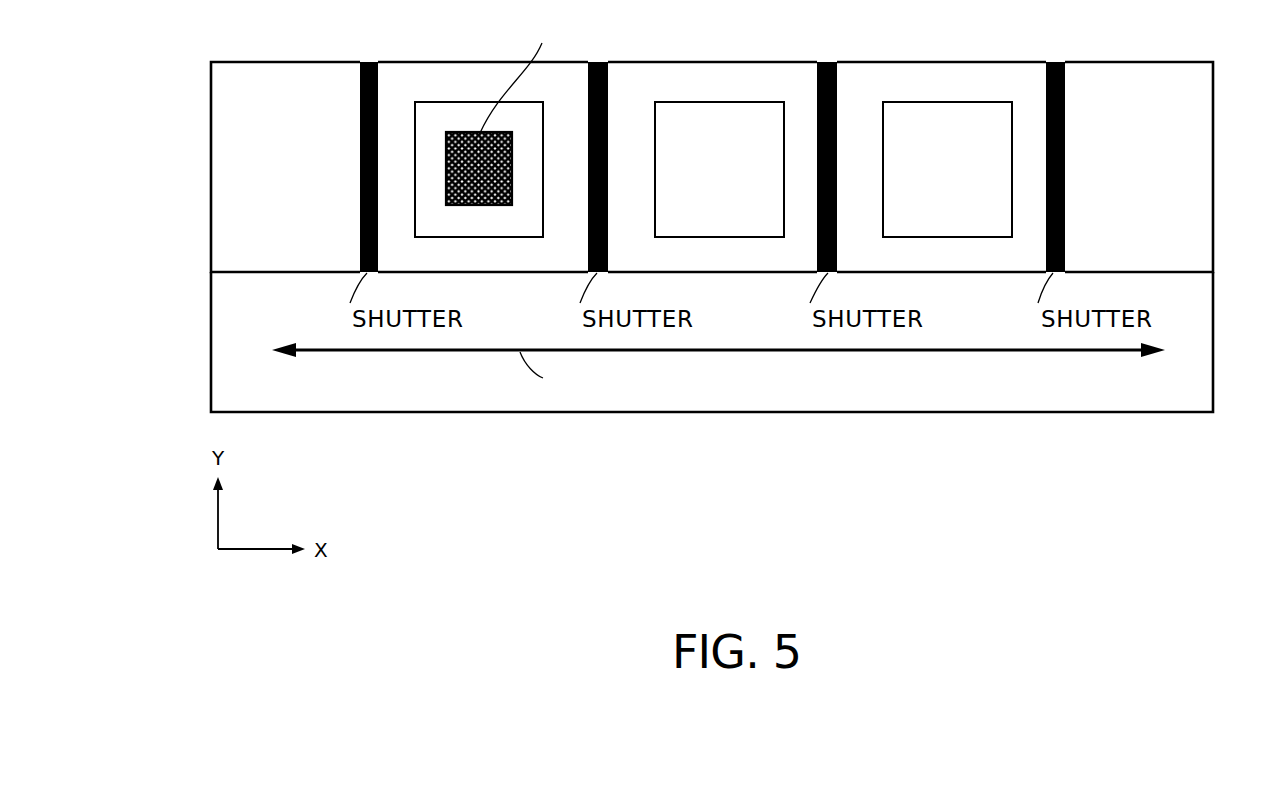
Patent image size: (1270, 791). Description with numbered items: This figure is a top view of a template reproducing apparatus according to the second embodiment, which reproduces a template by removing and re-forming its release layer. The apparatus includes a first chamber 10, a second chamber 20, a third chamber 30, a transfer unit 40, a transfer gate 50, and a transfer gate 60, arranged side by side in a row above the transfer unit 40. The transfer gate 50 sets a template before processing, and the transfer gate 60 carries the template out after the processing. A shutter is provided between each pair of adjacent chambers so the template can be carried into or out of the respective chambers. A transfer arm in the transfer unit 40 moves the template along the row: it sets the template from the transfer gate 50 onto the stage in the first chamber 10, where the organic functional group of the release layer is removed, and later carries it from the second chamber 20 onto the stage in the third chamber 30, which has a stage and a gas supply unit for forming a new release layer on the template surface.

The first chamber 10 is at (423, 73).
The second chamber 20 is at (655, 73).
The third chamber 30 is at (895, 73).
The transfer unit 40 is at (760, 411).
The transfer gate 50 is at (272, 74).
The transfer gate 60 is at (1112, 73).